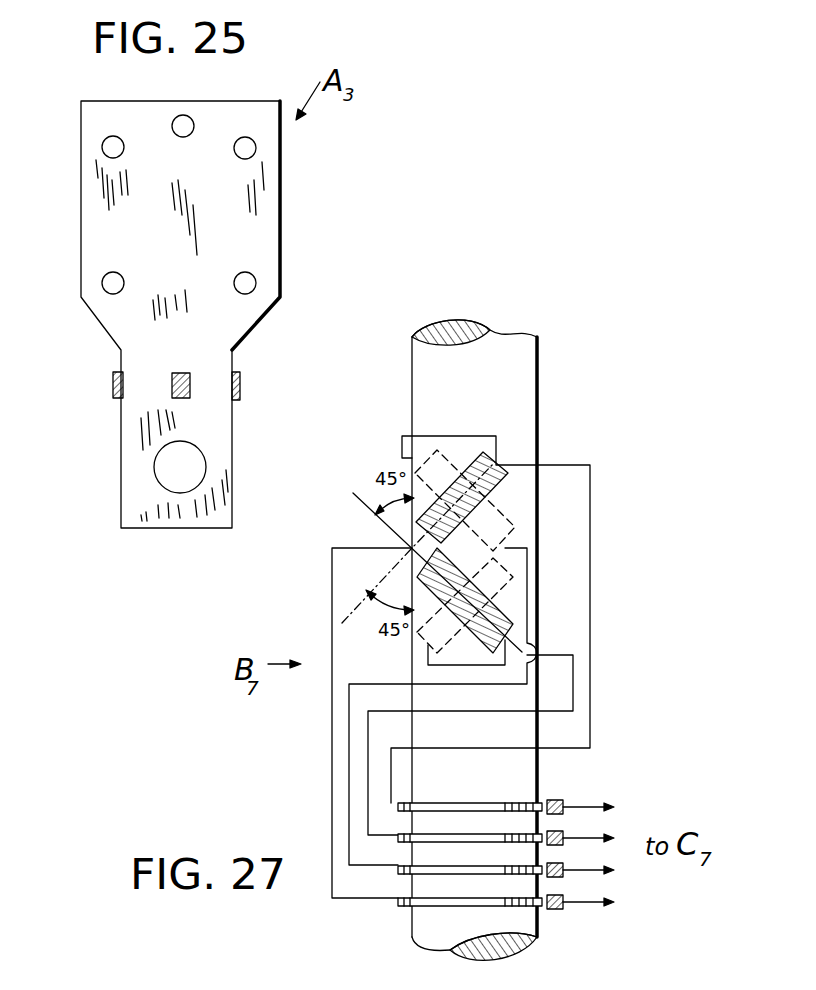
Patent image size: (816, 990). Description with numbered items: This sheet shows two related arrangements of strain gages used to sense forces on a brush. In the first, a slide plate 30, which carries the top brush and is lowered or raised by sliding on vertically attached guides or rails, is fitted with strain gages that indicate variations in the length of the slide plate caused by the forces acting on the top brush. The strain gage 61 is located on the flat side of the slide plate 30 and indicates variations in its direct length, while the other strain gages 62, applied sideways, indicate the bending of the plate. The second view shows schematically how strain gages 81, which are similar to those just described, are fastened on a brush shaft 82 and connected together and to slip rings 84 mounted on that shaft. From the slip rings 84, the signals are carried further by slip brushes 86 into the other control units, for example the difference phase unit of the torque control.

In FIG. 25, the slide plate 30 is at (103, 230).
In FIG. 25, the strain gage 61 is at (172, 390).
In FIG. 25, the strain gages 62 is at (232, 387).
In FIG. 27, the strain gages 81 is at (503, 487).
In FIG. 27, the brush shaft 82 is at (512, 383).
In FIG. 27, the slip rings 84 is at (412, 902).
In FIG. 27, the slip brushes 86 is at (568, 895).